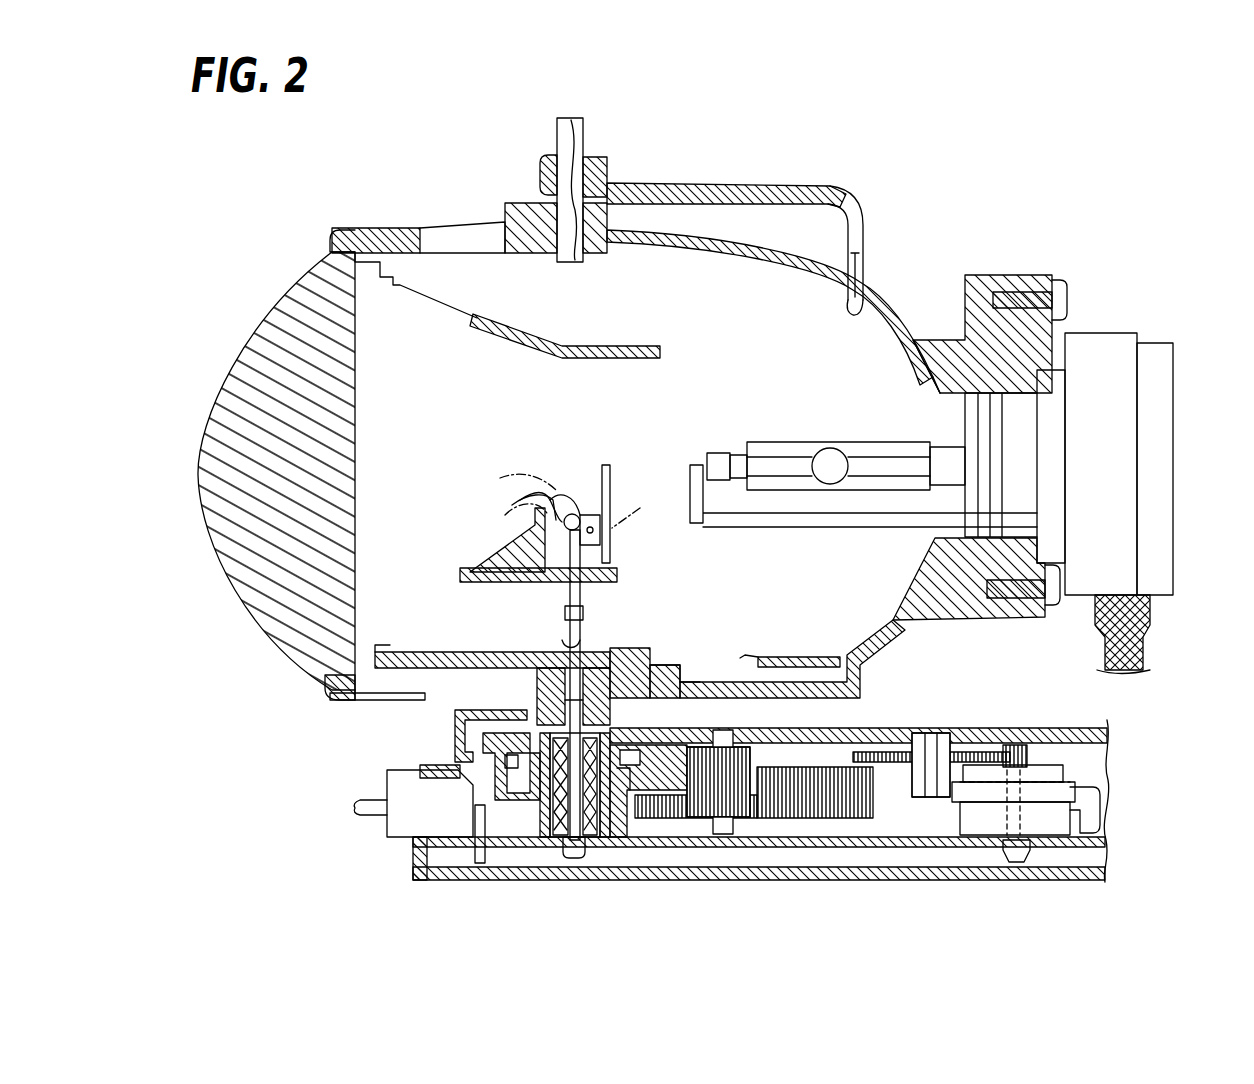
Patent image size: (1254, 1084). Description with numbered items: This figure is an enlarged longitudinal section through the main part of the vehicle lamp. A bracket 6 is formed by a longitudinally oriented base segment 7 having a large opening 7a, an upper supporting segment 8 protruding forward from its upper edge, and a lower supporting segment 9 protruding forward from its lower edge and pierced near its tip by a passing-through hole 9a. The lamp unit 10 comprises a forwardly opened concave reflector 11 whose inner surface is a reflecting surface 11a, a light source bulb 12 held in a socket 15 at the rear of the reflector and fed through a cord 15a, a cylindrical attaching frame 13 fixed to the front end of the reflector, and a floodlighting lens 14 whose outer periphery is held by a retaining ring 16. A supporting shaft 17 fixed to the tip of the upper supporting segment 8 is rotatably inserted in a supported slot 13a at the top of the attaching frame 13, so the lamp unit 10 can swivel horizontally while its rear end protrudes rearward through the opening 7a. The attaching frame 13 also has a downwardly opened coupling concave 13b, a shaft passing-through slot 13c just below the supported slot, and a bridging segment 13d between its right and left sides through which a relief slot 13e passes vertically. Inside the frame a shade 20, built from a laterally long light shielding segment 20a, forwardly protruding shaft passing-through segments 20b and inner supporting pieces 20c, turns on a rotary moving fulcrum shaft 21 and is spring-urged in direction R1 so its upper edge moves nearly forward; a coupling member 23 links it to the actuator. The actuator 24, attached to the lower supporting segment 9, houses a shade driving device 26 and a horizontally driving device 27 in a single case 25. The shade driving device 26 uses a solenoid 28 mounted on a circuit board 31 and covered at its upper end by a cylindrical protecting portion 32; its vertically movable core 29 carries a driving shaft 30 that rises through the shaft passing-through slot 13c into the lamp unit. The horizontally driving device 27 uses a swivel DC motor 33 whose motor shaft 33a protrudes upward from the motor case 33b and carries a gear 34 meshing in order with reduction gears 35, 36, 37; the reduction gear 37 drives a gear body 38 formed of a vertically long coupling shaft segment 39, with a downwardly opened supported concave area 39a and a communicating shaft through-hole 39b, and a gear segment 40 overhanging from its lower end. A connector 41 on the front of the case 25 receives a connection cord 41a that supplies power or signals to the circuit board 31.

The bracket 6 is at (735, 201).
The base segment 7 is at (864, 243).
The opening 7a is at (866, 305).
The upper supporting segment 8 is at (737, 187).
The lower supporting segment 9 is at (745, 658).
The passing-through hole 9a is at (700, 683).
The lamp unit 10 is at (893, 300).
The reflector 11 is at (962, 300).
The reflecting surface 11a is at (906, 309).
The light source bulb 12 is at (857, 447).
The attaching frame 13 is at (523, 230).
The supported slot 13a is at (563, 117).
The coupling concave 13b is at (560, 703).
The shaft passing-through slot 13c is at (557, 670).
The bridging segment 13d is at (600, 562).
The relief slot 13e is at (600, 582).
The floodlighting lens 14 is at (293, 293).
The socket 15 is at (1145, 483).
The cord 15a is at (1135, 660).
The retaining ring 16 is at (366, 227).
The supporting shaft 17 is at (586, 130).
The shade 20 is at (612, 465).
The light shielding segment 20a is at (596, 467).
The shaft passing-through segments 20b is at (558, 512).
The supporting pieces 20c is at (513, 470).
The rotary moving fulcrum shaft 21 is at (592, 510).
The coupling member 23 is at (535, 515).
The actuator 24 is at (884, 728).
The case 25 is at (978, 752).
The shade driving device 26 is at (612, 826).
The horizontally driving device 27 is at (975, 822).
The solenoid 28 is at (547, 823).
The core 29 is at (574, 858).
The driving shaft 30 is at (565, 618).
The circuit board 31 is at (831, 848).
The protecting portion 32 is at (620, 763).
The swivel DC motor 33 is at (1043, 836).
The motor shaft 33a is at (1080, 783).
The motor case 33b is at (1062, 770).
The gear 34 is at (1030, 757).
The reduction gear 35 is at (946, 745).
The reduction gear 36 is at (878, 803).
The reduction gear 37 is at (772, 822).
The gear body 38 is at (527, 716).
The coupling shaft segment 39 is at (560, 740).
The supported concave area 39a is at (673, 683).
The shaft through-hole 39b is at (582, 650).
The gear segment 40 is at (700, 745).
The connector 41 is at (397, 840).
The connection cord 41a is at (372, 810).
The direction R1 is at (675, 518).